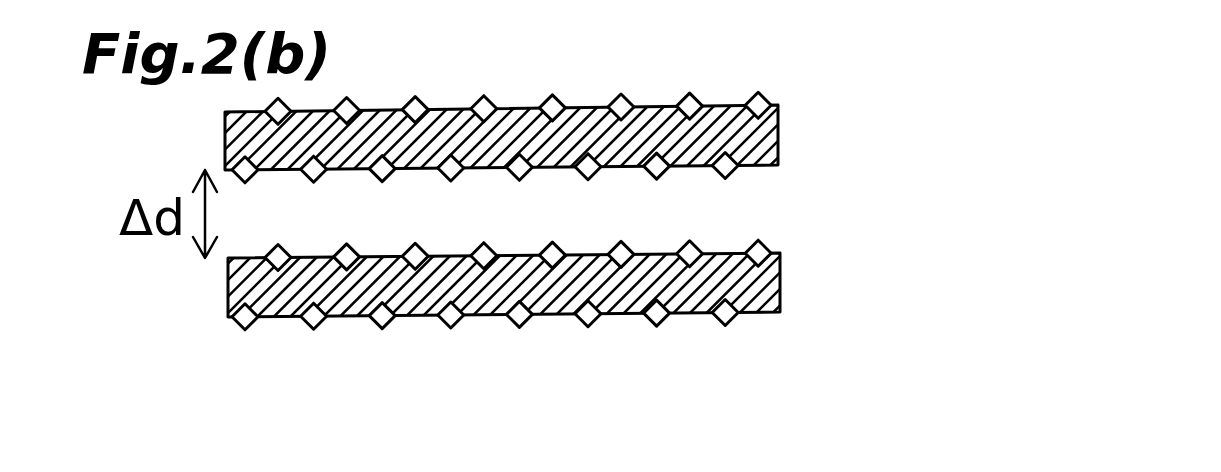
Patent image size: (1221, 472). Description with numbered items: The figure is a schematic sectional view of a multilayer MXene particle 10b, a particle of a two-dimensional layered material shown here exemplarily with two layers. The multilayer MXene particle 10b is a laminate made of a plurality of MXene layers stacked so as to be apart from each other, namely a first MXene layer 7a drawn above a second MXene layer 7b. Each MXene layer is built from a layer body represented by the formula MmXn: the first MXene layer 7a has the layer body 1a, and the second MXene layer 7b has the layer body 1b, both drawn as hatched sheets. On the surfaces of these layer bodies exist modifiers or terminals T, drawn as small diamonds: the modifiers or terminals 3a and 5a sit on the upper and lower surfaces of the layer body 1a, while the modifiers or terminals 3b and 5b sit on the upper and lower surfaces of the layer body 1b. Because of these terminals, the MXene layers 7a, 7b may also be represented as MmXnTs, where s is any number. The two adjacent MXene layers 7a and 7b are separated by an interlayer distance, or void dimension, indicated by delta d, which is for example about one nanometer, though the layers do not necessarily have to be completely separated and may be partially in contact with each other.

The layer body 1a is at (770, 131).
The modifier or terminal T 3a is at (764, 102).
The modifier or terminal T 5a is at (732, 171).
The MXene layer 7a is at (610, 135).
The layer body 1b is at (772, 280).
The modifier or terminal T 3b is at (764, 250).
The modifier or terminal T 5b is at (733, 319).
The MXene layer 7b is at (612, 281).
The multilayer MXene particle 10b is at (672, 241).